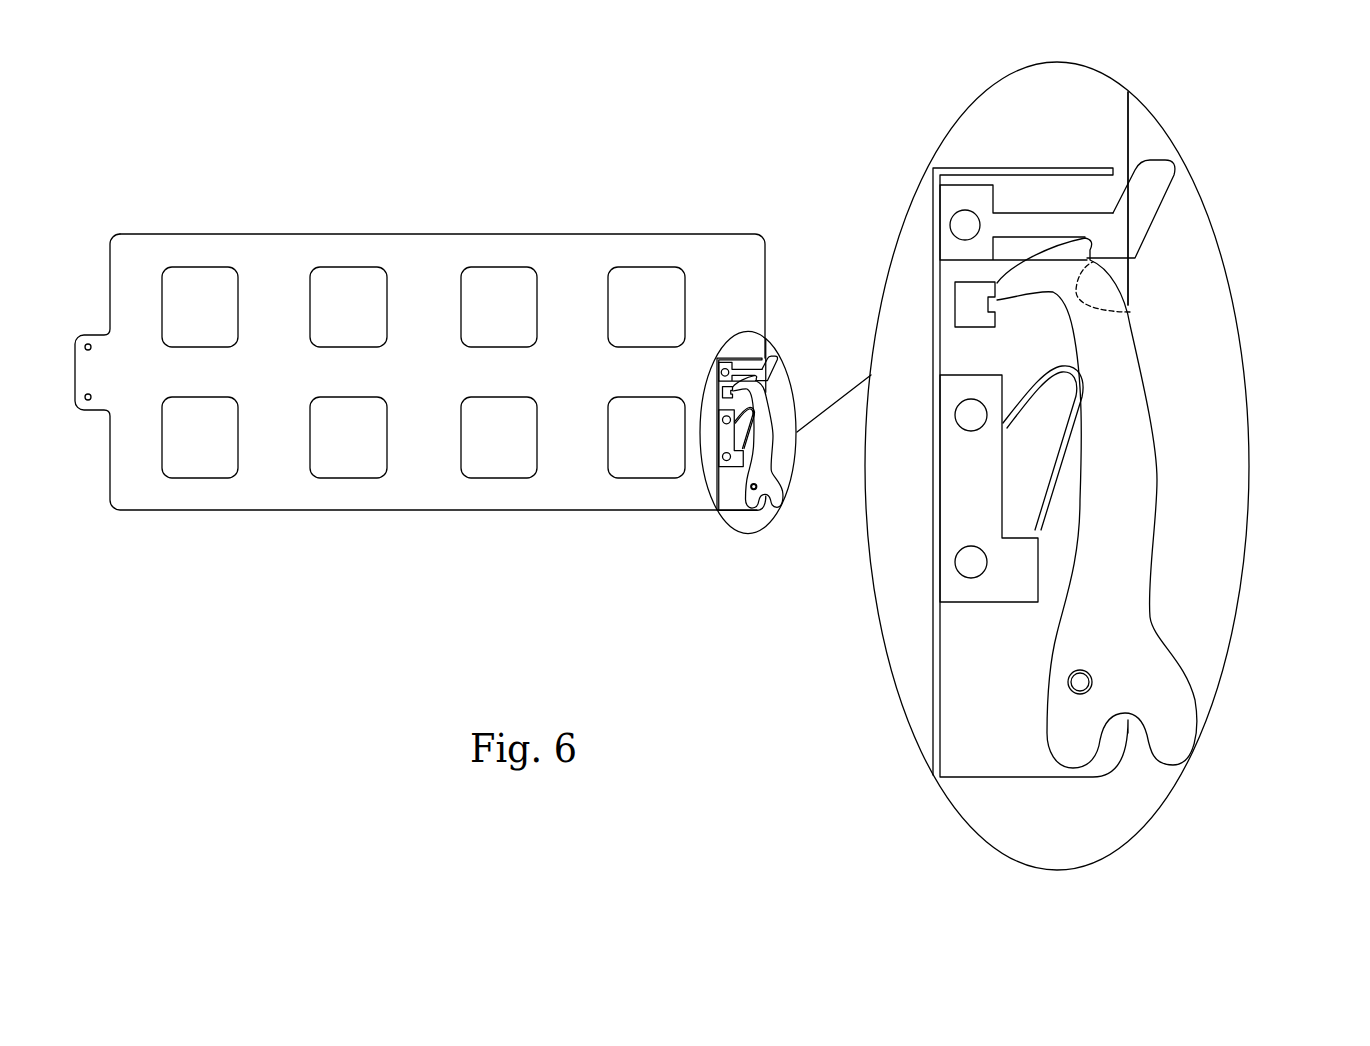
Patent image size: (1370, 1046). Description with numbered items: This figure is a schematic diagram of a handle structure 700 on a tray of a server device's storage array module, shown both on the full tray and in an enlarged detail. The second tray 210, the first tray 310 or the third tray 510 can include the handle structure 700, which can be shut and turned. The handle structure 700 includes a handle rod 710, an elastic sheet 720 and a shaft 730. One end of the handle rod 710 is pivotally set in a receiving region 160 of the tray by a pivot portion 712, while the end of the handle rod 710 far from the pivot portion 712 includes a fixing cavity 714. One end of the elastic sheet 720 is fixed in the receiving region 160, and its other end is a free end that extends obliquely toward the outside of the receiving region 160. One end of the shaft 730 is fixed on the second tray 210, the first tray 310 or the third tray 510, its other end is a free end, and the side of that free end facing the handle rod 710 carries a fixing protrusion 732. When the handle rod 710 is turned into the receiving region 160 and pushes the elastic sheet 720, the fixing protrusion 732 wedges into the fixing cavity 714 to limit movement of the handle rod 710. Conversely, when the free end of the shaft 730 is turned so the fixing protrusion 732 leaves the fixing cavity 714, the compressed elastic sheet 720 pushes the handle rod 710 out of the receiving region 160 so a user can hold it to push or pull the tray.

The receiving region 160 is at (1067, 183).
The second tray 210 is at (601, 431).
The first tray 310 is at (601, 431).
The third tray 510 is at (271, 277).
The handle structure 700 is at (793, 387).
The handle rod 710 is at (1123, 473).
The pivot portion 712 is at (1087, 680).
The fixing cavity 714 is at (1130, 313).
The elastic sheet 720 is at (1043, 502).
The shaft 730 is at (1025, 227).
The fixing protrusion 732 is at (1107, 247).